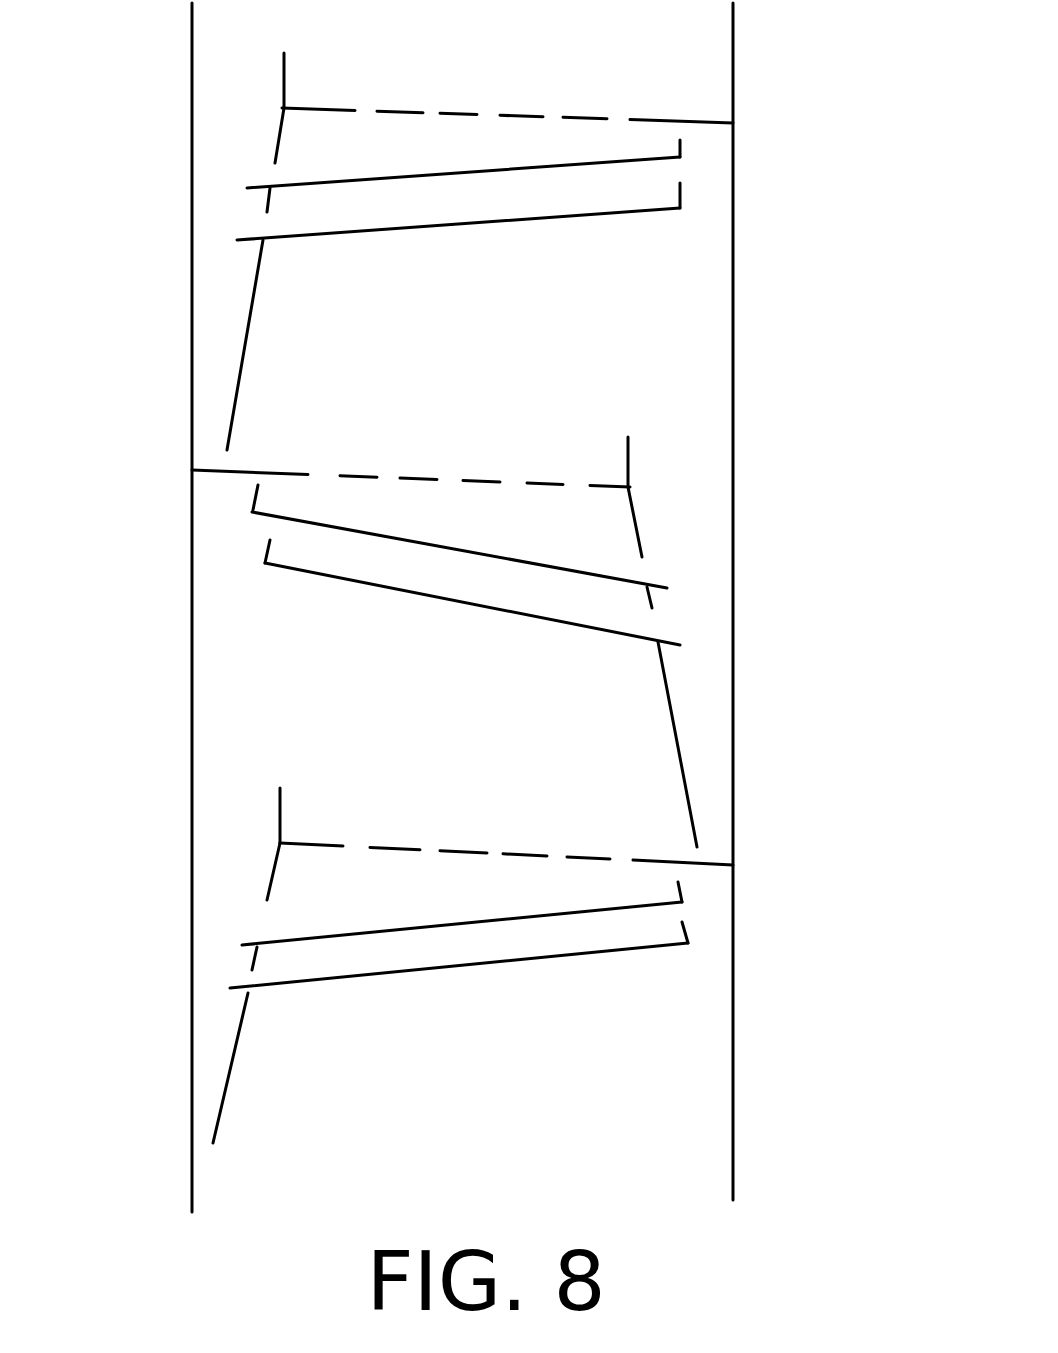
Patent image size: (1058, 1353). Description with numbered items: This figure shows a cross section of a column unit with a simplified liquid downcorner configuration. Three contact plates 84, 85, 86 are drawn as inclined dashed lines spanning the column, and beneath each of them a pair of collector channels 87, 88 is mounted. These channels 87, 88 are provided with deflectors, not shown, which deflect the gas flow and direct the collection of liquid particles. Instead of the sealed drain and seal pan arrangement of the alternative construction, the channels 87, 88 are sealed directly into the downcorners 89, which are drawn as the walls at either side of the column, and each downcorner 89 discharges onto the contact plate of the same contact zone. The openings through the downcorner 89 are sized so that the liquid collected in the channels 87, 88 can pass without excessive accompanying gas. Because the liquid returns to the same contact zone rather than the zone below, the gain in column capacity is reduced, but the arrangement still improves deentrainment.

The contact plate 84 is at (460, 108).
The contact plate 85 is at (477, 480).
The contact plate 86 is at (463, 850).
The channel 87 is at (393, 177).
The channel 88 is at (427, 230).
The downcorner 89 is at (210, 211).